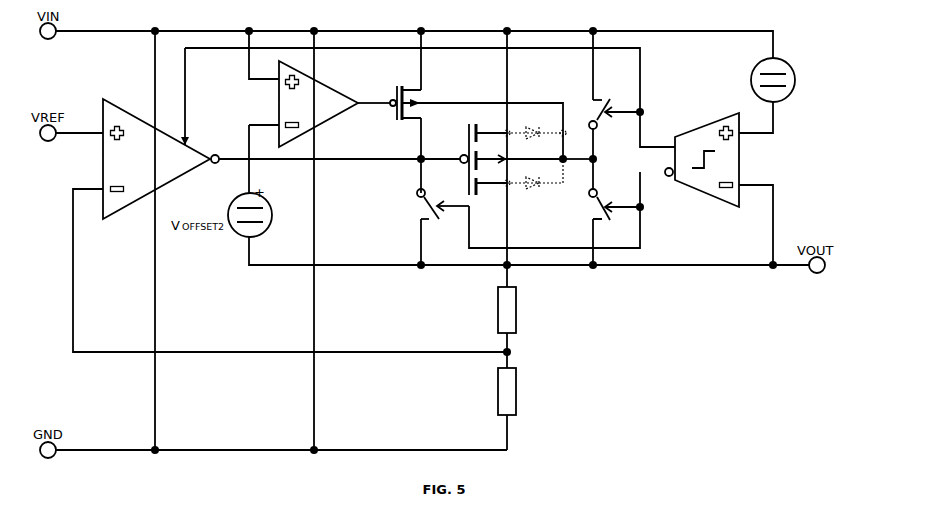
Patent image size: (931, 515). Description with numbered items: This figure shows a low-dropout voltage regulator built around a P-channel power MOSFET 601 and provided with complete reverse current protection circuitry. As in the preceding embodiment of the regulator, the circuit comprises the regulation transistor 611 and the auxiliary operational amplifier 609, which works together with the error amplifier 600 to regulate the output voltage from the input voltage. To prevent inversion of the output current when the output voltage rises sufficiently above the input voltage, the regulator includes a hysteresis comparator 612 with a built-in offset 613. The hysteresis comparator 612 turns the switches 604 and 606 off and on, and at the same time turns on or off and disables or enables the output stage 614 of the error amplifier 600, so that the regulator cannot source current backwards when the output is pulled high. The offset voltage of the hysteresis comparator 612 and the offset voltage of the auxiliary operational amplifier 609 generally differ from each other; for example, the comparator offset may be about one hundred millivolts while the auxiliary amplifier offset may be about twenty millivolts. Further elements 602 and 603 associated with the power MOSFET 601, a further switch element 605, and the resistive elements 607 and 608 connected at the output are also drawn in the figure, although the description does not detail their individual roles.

The error amplifier 600 is at (157, 141).
The P-channel power MOSFET 601 is at (504, 156).
The source-body diode 602 is at (535, 122).
The drain-body diode 603 is at (533, 187).
The switch 604 is at (428, 204).
The switch 605 is at (614, 134).
The switch 606 is at (614, 220).
The resistor R1 607 is at (504, 310).
The resistor R2 608 is at (504, 391).
The auxiliary operational amplifier 609 is at (321, 101).
The regulation transistor 611 is at (473, 115).
The hysteresis comparator 612 is at (702, 164).
The built-in offset 613 is at (802, 89).
The output stage 614 is at (199, 96).